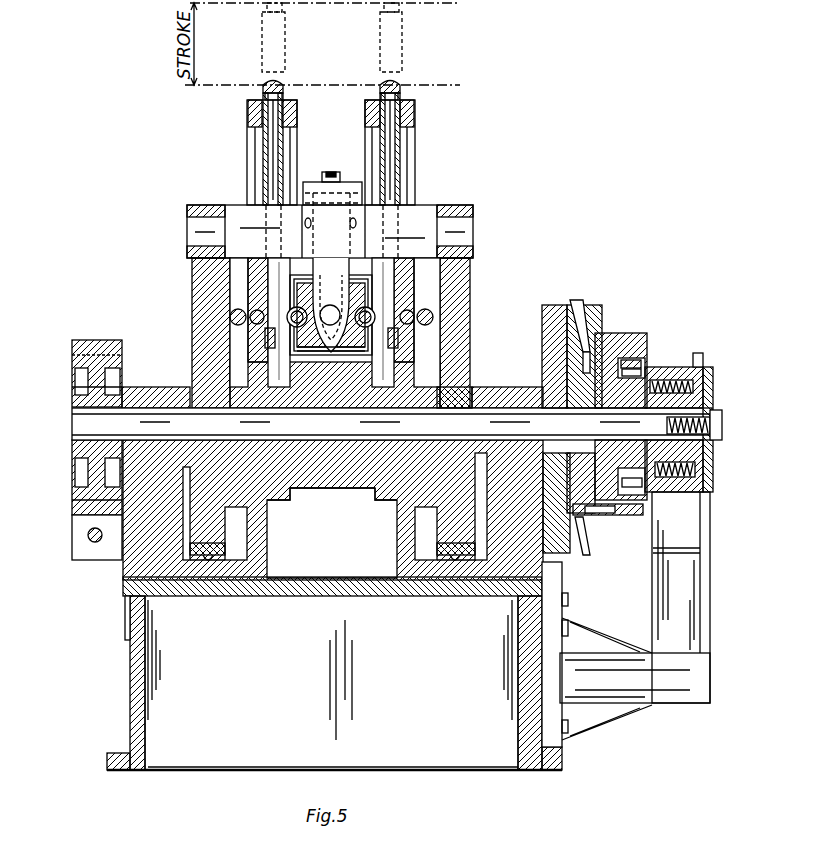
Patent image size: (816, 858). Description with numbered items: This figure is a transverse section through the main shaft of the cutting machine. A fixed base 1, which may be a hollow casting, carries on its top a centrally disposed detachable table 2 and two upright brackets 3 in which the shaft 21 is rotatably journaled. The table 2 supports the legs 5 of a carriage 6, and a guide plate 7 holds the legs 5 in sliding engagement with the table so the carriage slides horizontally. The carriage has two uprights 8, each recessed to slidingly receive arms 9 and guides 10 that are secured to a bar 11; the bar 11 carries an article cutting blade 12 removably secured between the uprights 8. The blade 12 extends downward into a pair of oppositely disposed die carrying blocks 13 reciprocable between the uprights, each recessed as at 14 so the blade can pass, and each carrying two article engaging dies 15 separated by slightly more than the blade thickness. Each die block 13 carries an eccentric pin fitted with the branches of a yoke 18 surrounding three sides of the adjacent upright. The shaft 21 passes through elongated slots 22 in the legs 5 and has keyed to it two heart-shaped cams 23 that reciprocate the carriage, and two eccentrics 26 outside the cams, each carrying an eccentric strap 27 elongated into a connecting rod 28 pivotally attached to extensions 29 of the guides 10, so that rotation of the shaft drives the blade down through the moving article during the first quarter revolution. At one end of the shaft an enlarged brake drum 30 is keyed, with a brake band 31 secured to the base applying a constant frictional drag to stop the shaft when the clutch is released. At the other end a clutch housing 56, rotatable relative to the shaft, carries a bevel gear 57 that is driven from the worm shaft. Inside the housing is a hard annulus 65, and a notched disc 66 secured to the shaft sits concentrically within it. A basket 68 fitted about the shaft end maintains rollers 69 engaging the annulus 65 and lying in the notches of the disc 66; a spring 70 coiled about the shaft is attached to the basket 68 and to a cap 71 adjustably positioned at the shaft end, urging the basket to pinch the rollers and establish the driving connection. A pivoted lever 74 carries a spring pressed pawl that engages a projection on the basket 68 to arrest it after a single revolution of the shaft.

The fixed base 1 is at (138, 690).
The table 2 is at (262, 554).
The upright brackets 3 is at (140, 397).
The legs 5 is at (292, 493).
The carriage 6 is at (365, 383).
The guide plate 7 is at (348, 491).
The uprights 8 is at (276, 291).
The arms 9 is at (278, 275).
The guides 10 is at (283, 144).
The bar 11 is at (405, 250).
The article cutting blade 12 is at (395, 240).
The die carrying blocks 13 is at (290, 328).
The recess 14 is at (290, 345).
The article engaging dies 15 is at (331, 305).
The yoke 18 is at (232, 315).
The shaft 21 is at (470, 394).
The elongated slots 22 is at (335, 333).
The heart-shaped cams 23 is at (331, 533).
The eccentrics 26 is at (225, 554).
The eccentric strap 27 is at (212, 562).
The connecting rod 28 is at (205, 285).
The extensions 29 is at (200, 230).
The brake drum 30 is at (90, 389).
The brake band 31 is at (80, 348).
The clutch housing 56 is at (620, 352).
The bevel gear 57 is at (592, 327).
The annulus 65 is at (645, 362).
The disc 66 is at (713, 387).
The basket 68 is at (713, 490).
The rollers 69 is at (660, 375).
The spring 70 is at (704, 360).
The cap 71 is at (713, 457).
The pivoted lever 74 is at (690, 532).